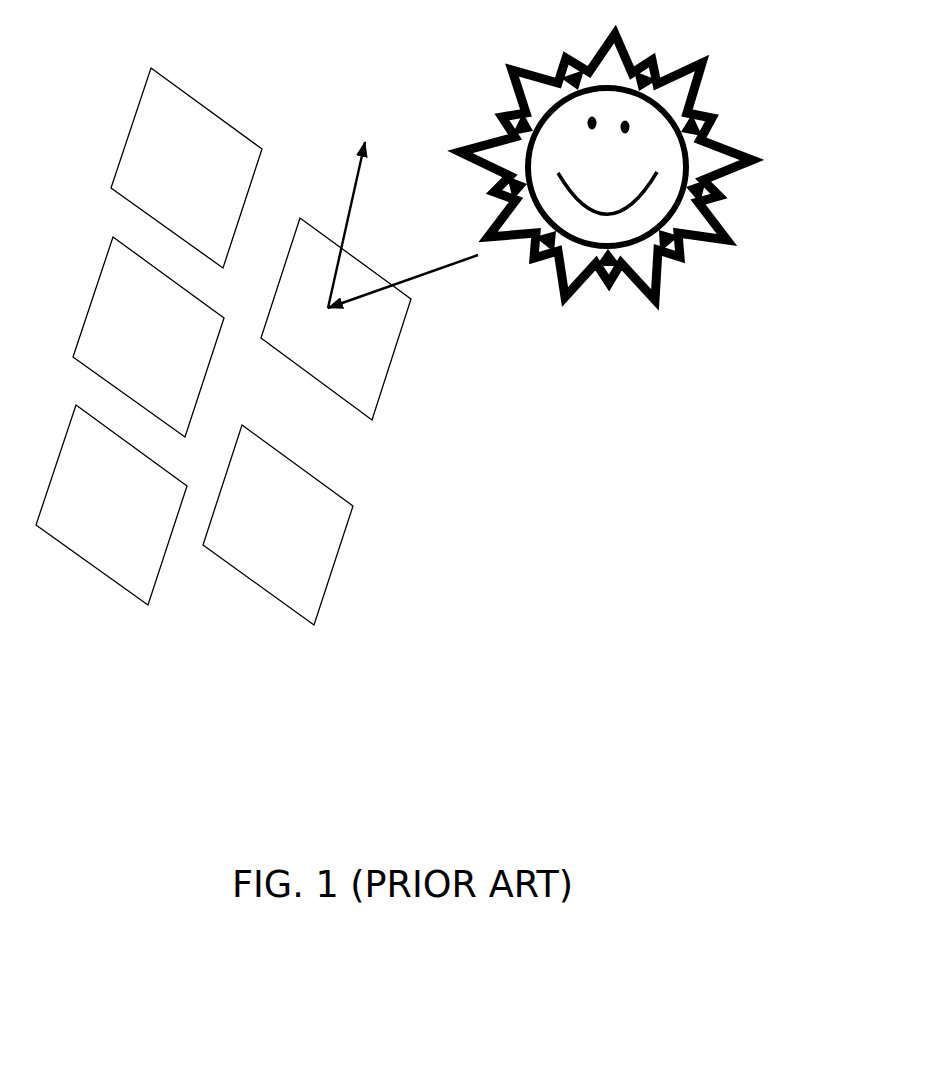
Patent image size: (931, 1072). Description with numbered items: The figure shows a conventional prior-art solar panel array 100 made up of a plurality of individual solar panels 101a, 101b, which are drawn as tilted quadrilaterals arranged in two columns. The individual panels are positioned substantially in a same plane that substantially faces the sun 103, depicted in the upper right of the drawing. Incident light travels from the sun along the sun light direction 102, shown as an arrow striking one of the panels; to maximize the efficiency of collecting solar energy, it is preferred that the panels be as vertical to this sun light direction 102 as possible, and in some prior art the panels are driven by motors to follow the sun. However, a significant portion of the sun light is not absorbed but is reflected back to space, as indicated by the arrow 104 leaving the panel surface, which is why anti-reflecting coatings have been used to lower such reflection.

The solar panel array 100 is at (442, 535).
The solar panel 101a is at (364, 385).
The solar panel 101b is at (308, 500).
The sun light direction 102 is at (423, 272).
The sun 103 is at (687, 263).
The arrow 104 is at (362, 146).